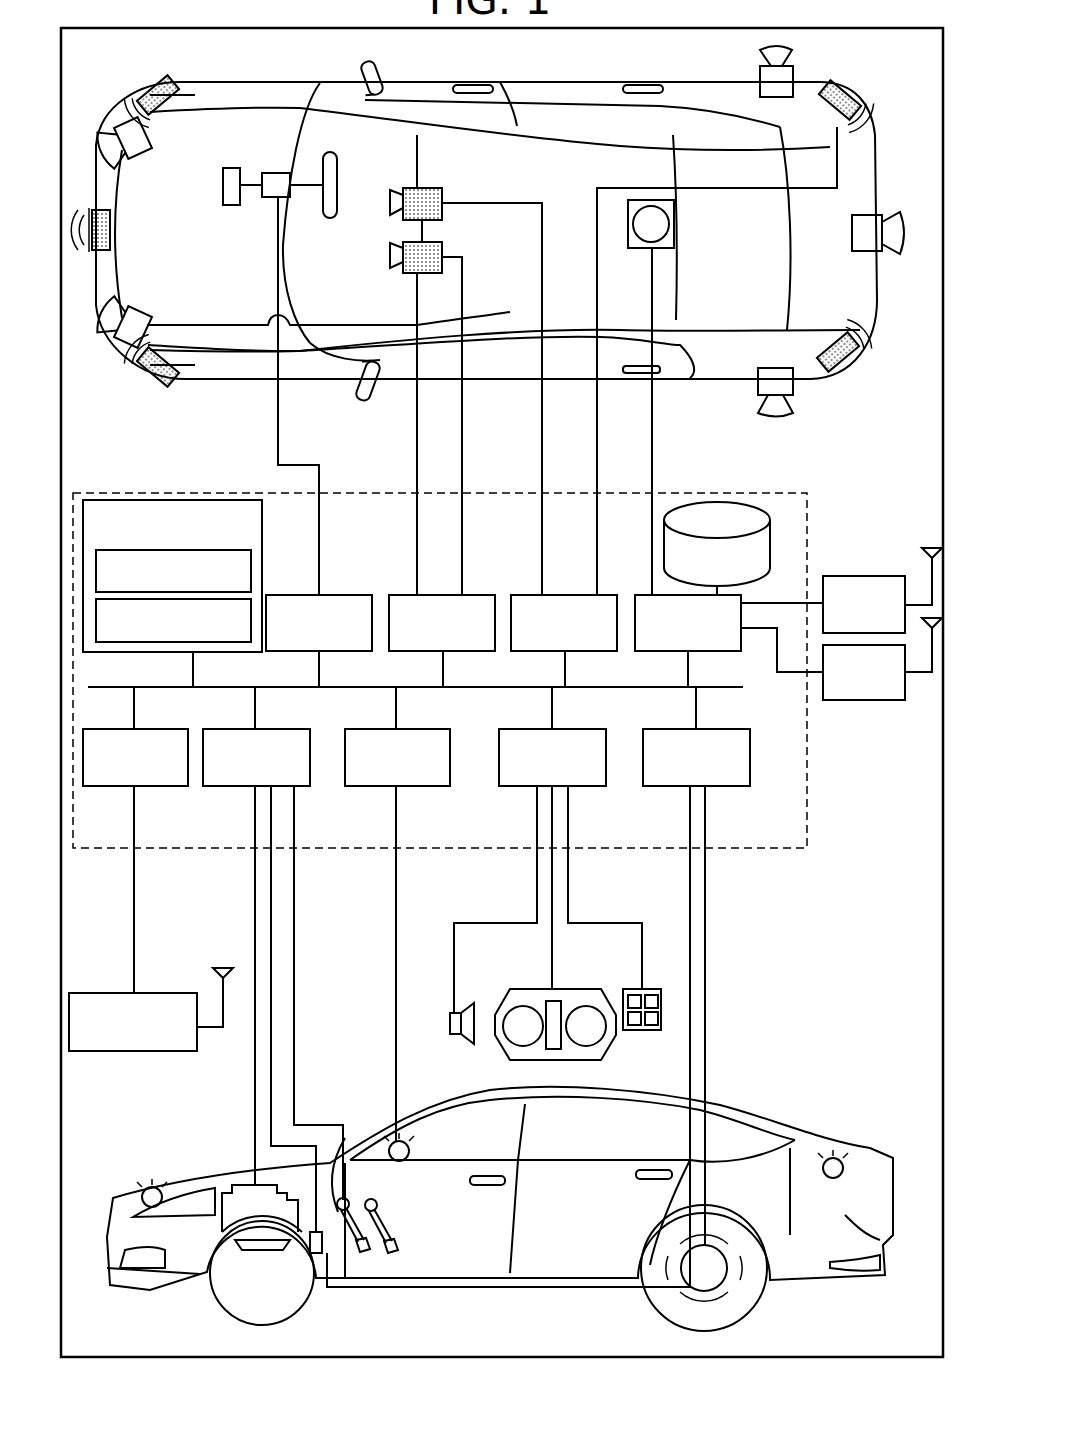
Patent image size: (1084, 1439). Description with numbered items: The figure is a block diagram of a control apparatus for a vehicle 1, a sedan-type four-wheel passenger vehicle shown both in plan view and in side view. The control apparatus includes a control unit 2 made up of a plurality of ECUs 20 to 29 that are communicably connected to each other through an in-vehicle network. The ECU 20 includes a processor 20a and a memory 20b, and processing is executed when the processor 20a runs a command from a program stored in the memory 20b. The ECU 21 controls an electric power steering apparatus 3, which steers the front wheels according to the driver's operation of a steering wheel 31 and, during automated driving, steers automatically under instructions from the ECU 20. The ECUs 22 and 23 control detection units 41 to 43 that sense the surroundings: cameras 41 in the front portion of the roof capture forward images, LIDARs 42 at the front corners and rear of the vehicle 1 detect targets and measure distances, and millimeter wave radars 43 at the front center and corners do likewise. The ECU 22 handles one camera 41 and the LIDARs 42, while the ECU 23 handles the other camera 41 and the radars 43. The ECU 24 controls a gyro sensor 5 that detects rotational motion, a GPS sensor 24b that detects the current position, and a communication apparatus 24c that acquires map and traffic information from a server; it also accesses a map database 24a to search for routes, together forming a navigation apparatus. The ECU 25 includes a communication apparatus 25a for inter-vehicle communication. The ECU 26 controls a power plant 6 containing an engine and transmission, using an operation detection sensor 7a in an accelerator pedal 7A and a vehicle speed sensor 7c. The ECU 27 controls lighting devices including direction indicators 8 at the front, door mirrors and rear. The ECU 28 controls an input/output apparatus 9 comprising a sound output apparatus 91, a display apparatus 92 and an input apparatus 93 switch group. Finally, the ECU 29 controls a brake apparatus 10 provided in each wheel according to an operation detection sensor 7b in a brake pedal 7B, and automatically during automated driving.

The vehicle 1 is at (880, 142).
The control unit 2 is at (779, 850).
The electric power steering apparatus 3 is at (235, 206).
The steering wheel 31 is at (329, 220).
The detection unit (camera) 41 is at (445, 190).
The detection unit (LIDAR) 42 is at (150, 160).
The detection unit (millimeter wave radar) 43 is at (172, 86).
The gyro sensor 5 is at (676, 226).
The ECU 20 is at (195, 552).
The processor 20a is at (240, 549).
The memory 20b is at (242, 598).
The ECU 21 is at (351, 592).
The ECU 22 is at (441, 592).
The ECU 23 is at (568, 592).
The ECU 24 is at (638, 592).
The map database 24a is at (712, 500).
The GPS sensor 24b is at (882, 574).
The communication apparatus 24c is at (872, 702).
The ECU 25 is at (163, 788).
The communication apparatus 25a is at (133, 1054).
The ECU 26 is at (240, 788).
The ECU 27 is at (430, 788).
The ECU 28 is at (592, 788).
The ECU 29 is at (735, 788).
The power plant 6 is at (224, 1183).
The operation detection sensor 7a is at (345, 1138).
The operation detection sensor 7b is at (370, 1202).
The accelerator pedal 7A is at (382, 1256).
The brake pedal 7B is at (397, 1238).
The vehicle speed sensor 7c is at (316, 1256).
The direction indicators 8 is at (142, 1194).
The input/output apparatus 9 is at (541, 1034).
The sound output apparatus 91 is at (449, 1020).
The display apparatus 92 is at (512, 998).
The input apparatus 93 is at (642, 1031).
The brake apparatus 10 is at (712, 1291).